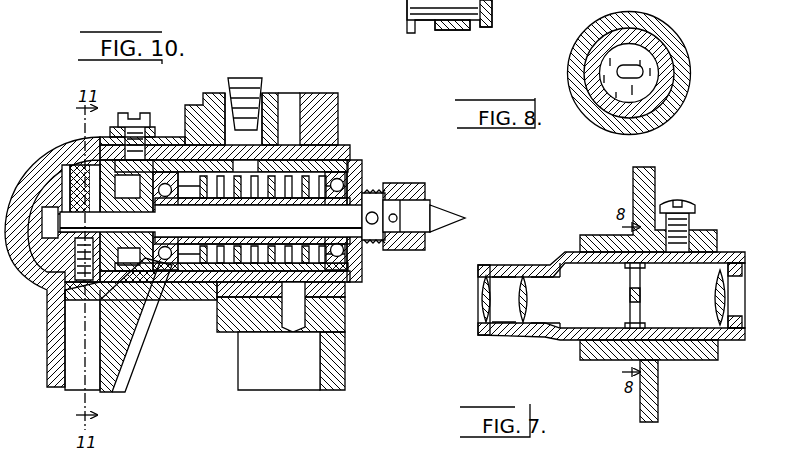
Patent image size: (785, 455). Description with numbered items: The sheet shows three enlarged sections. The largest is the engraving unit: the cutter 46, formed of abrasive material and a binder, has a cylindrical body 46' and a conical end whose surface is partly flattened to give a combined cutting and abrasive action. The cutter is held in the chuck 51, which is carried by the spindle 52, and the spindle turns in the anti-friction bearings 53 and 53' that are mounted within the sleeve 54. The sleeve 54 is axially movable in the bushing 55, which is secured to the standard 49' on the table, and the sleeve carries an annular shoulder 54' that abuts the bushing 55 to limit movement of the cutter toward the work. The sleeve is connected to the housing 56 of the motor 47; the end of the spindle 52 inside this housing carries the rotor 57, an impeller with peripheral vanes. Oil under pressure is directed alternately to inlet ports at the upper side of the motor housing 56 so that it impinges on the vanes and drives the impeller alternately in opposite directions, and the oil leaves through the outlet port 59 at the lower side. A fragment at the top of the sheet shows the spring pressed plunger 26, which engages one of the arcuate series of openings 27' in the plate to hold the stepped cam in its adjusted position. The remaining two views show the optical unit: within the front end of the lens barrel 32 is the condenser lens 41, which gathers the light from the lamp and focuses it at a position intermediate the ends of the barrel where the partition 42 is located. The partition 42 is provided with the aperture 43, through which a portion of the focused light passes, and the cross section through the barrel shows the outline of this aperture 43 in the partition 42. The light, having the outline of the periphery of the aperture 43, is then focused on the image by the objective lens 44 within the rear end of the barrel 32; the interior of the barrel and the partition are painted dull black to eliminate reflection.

In FIG. 10, the motor 47 is at (88, 165).
In FIG. 10, the rotor 57 is at (83, 170).
In FIG. 10, the outlet port 59 is at (47, 333).
In FIG. 10, the sleeve 54 is at (213, 222).
In FIG. 10, the annular shoulder 54' is at (142, 117).
In FIG. 10, the anti-friction bearing 53 is at (249, 155).
In FIG. 10, the anti-friction bearing 53' is at (231, 294).
In FIG. 10, the bushing 55 is at (340, 160).
In FIG. 10, the spindle 52 is at (368, 190).
In FIG. 10, the cutter 46 is at (438, 202).
In FIG. 10, the cylindrical body 46' is at (420, 192).
In FIG. 10, the chuck 51 is at (405, 252).
In FIG. 10, the standard 49' is at (296, 336).
In FIG. 10, the motor housing 56 is at (125, 364).
In FIG. 8, the spring pressed plunger 26 is at (472, 30).
In FIG. 8, the openings 27' is at (468, 12).
In FIG. 8, the partition 42 is at (655, 70).
In FIG. 7, the partition 42 is at (630, 290).
In FIG. 8, the aperture 43 is at (640, 77).
In FIG. 7, the aperture 43 is at (642, 297).
In FIG. 7, the lens barrel 32 is at (567, 250).
In FIG. 7, the objective lens 44 is at (496, 322).
In FIG. 7, the condenser lens 41 is at (736, 266).